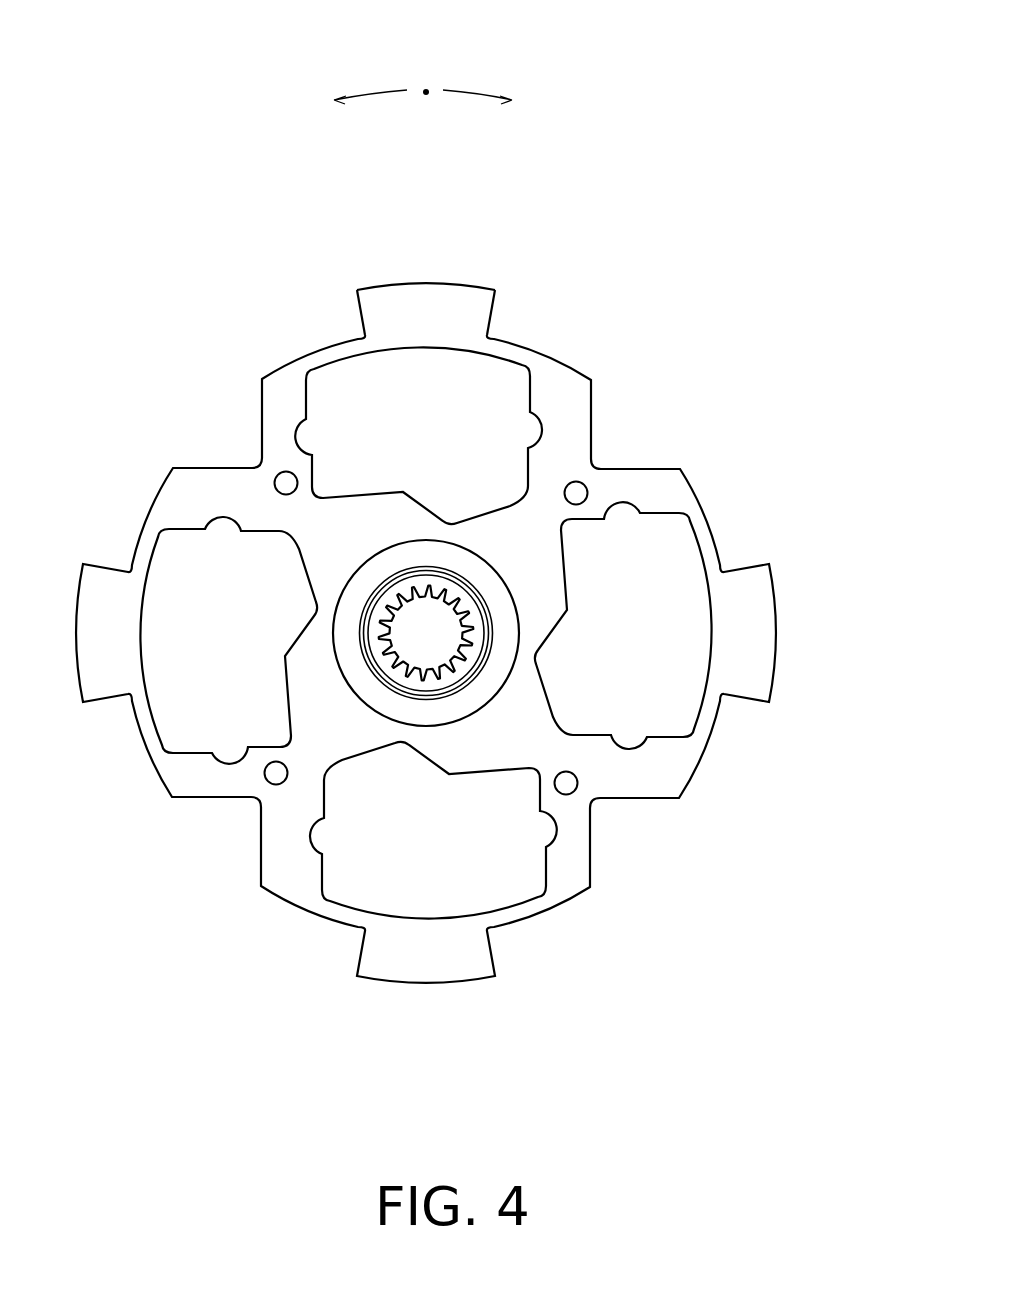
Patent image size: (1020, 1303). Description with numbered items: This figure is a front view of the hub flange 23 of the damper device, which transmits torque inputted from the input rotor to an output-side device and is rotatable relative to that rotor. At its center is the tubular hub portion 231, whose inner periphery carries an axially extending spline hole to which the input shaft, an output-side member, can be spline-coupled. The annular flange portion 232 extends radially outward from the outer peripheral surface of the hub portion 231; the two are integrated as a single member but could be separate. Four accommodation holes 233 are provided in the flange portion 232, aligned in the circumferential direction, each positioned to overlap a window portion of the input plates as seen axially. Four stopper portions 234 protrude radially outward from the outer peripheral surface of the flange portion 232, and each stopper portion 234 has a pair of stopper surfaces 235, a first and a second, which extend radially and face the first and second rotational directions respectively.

The hub flange 23 is at (716, 167).
The hub portion 231 is at (488, 590).
The flange portion 232 is at (558, 382).
The accommodation hole 233 is at (293, 437).
The stopper portion 234 is at (443, 297).
The stopper surface 235 is at (493, 308).